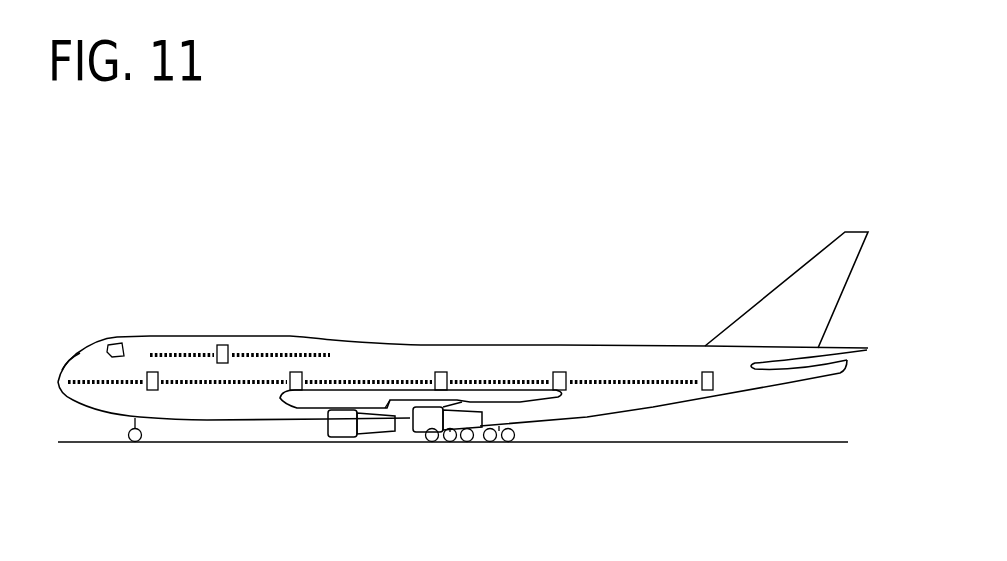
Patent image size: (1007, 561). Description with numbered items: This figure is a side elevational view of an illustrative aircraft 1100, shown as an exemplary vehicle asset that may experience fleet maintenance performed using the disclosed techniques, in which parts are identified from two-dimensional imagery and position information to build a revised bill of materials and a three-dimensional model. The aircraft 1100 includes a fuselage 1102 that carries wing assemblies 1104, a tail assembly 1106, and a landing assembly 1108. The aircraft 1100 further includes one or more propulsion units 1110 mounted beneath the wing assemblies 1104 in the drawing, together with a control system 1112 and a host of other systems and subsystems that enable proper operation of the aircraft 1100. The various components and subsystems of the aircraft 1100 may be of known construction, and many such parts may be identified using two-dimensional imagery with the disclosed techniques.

The aircraft 1100 is at (131, 163).
The fuselage 1102 is at (590, 410).
The wing assemblies 1104 is at (303, 402).
The tail assembly 1106 is at (774, 255).
The landing assembly 1108 is at (456, 455).
The propulsion units 1110 is at (335, 432).
The control system 1112 is at (53, 408).